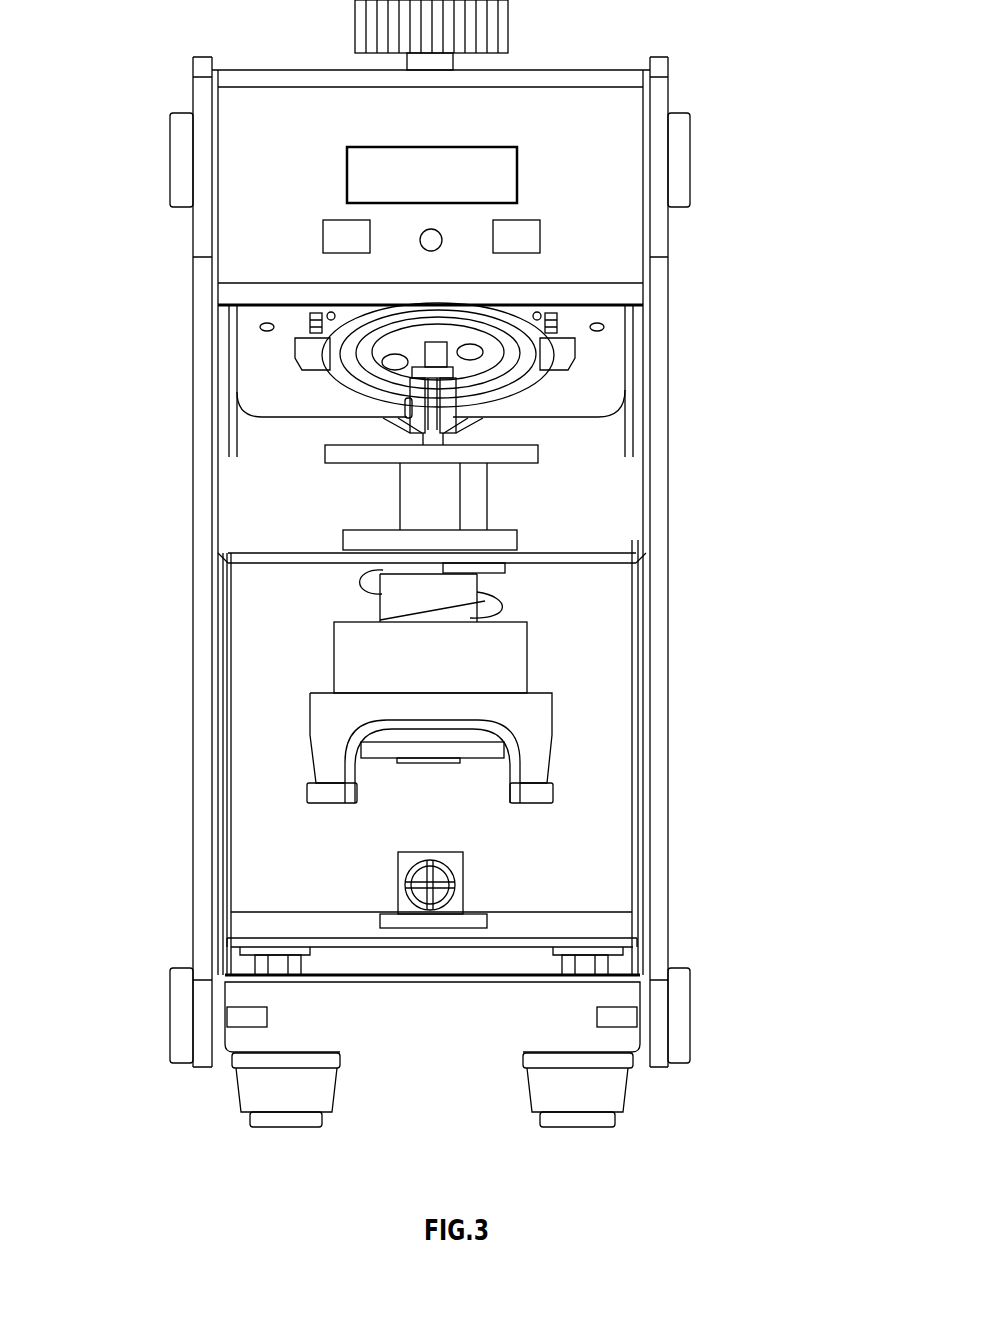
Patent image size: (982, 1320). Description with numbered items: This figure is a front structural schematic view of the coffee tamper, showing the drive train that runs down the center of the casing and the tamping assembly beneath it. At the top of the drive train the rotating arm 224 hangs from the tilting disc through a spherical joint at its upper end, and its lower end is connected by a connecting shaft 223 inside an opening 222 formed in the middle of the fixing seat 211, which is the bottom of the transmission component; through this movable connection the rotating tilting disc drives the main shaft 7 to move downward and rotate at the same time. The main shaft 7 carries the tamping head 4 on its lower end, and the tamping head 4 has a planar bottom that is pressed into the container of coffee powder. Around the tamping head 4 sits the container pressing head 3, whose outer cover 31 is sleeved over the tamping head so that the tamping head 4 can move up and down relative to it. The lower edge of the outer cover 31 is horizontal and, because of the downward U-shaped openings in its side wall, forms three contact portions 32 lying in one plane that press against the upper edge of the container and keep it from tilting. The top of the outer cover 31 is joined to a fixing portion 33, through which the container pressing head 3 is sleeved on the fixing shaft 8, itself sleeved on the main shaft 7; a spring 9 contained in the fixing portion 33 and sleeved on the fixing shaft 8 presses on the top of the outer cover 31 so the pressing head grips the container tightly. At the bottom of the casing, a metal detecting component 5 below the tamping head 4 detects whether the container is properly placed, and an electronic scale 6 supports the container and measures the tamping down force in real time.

The container pressing head 3 is at (325, 675).
The outer cover 31 is at (528, 712).
The contact portions 32 is at (325, 794).
The fixing portion 33 is at (513, 658).
The tamping head 4 is at (460, 742).
The metal detecting component 5 is at (402, 867).
The electronic scale 6 is at (588, 942).
The main shaft 7 is at (443, 500).
The fixing shaft 8 is at (388, 602).
The spring 9 is at (498, 608).
The fixing seat 211 is at (445, 435).
The opening 222 is at (420, 433).
The connecting shaft 223 is at (408, 412).
The rotating arm 224 is at (433, 357).